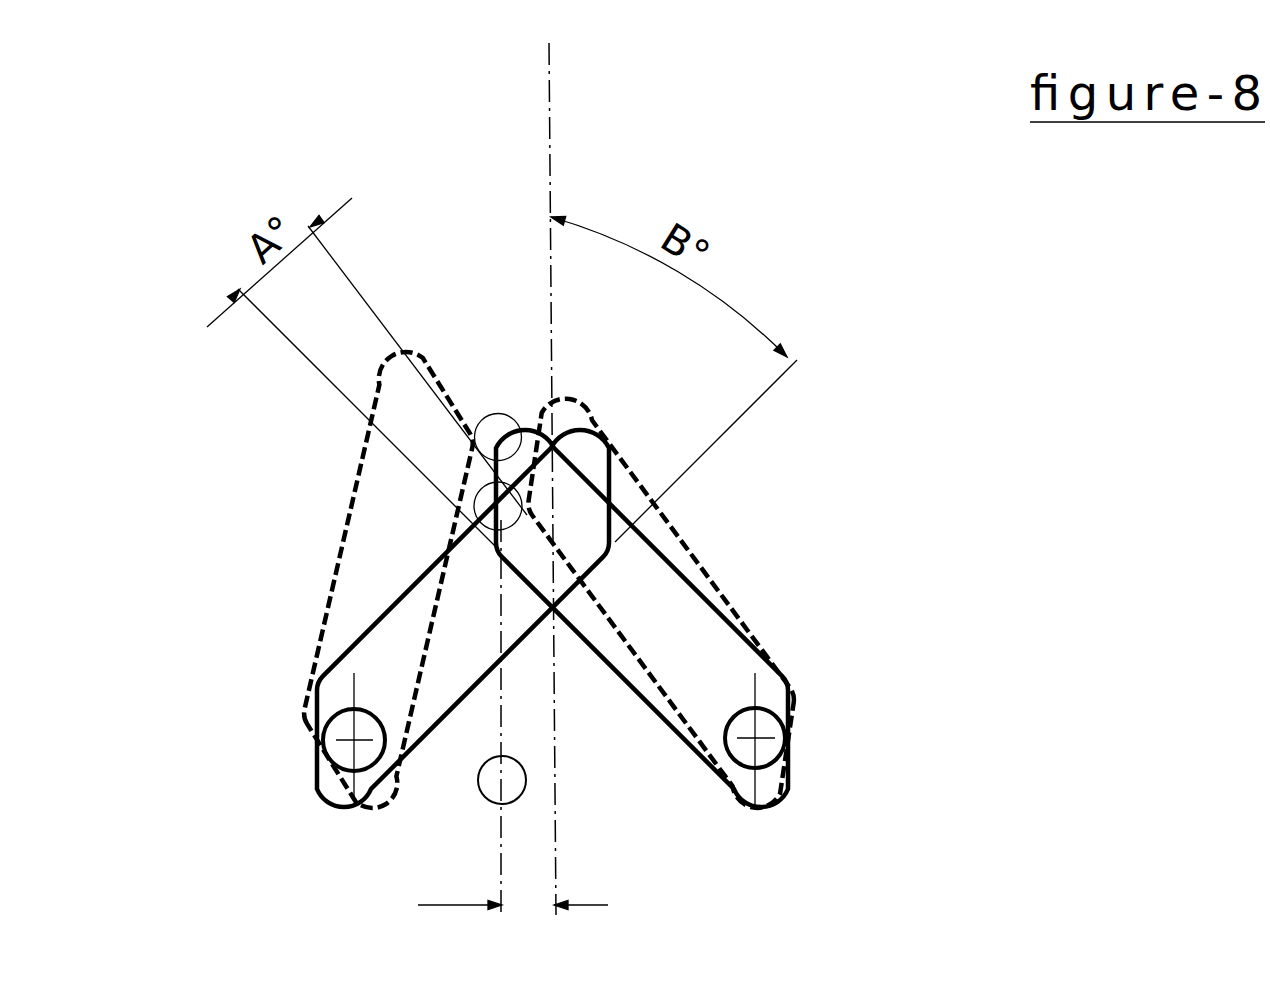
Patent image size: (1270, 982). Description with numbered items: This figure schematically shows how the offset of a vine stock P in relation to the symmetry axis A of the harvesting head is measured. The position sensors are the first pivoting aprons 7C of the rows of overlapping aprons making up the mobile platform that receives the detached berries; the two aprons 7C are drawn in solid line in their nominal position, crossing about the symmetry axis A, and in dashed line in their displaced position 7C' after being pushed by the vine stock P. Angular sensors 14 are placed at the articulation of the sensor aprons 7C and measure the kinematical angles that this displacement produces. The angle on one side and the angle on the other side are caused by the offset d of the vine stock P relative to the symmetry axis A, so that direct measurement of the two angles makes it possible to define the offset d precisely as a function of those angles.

The first pivoting apron 7C is at (524, 618).
The pivoted position of sensor apron 7C' is at (519, 580).
The angular sensor 14 is at (326, 752).
The symmetry axis of the harvesting head A is at (551, 153).
The vine stock P is at (481, 795).
The offset d is at (513, 717).